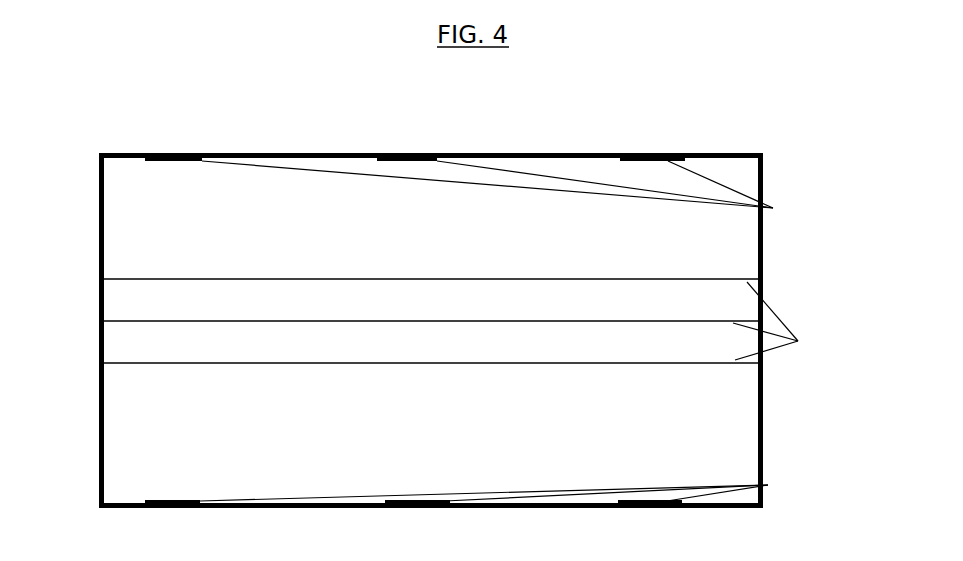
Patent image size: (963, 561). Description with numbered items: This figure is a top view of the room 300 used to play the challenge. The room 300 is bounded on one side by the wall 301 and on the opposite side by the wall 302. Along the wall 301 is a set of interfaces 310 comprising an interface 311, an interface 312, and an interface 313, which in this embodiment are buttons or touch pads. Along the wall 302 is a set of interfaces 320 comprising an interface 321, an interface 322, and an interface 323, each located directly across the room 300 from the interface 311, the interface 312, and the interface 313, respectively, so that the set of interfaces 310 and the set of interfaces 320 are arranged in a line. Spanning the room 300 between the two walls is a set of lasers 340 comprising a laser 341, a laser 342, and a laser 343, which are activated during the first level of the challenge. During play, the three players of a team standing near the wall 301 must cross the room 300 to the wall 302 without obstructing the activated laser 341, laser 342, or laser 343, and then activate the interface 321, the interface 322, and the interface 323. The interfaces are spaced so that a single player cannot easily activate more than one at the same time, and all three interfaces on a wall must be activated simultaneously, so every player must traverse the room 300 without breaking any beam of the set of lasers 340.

The room 300 is at (431, 297).
The wall 301 is at (552, 155).
The wall 302 is at (547, 508).
The set of interfaces 310 is at (763, 208).
The interface 311 is at (165, 158).
The interface 312 is at (418, 141).
The interface 313 is at (652, 155).
The set of interfaces 320 is at (763, 485).
The interface 321 is at (170, 507).
The interface 322 is at (423, 523).
The interface 323 is at (643, 508).
The set of lasers 340 is at (824, 321).
The laser 341 is at (125, 361).
The laser 342 is at (118, 319).
The laser 343 is at (112, 275).